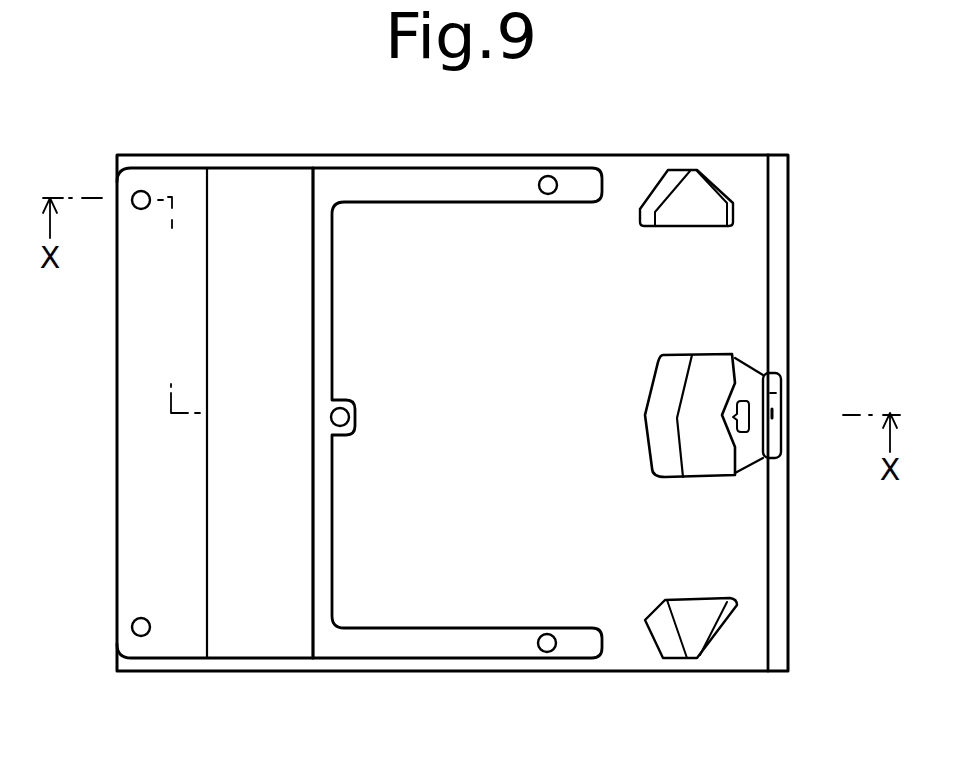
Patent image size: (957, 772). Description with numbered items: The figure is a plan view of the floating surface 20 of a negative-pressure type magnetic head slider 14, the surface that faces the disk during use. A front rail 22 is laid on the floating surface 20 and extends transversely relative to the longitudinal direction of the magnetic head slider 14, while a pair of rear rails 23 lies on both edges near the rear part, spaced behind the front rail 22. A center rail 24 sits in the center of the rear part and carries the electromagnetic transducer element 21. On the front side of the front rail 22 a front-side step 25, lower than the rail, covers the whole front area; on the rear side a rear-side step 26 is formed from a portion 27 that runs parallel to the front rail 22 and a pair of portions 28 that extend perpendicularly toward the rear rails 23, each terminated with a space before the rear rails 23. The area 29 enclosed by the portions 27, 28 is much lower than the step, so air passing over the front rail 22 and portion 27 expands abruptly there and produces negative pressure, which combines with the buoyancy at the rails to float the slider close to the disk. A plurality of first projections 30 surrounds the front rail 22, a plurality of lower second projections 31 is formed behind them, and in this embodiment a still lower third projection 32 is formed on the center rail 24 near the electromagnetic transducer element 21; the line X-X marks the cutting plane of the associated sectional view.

The magnetic head slider 14 is at (747, 155).
The floating surface 20 is at (605, 250).
The electromagnetic transducer element 21 is at (778, 392).
The front rail 22 is at (262, 629).
The rear rails 23 is at (692, 203).
The center rail 24 is at (712, 375).
The front-side step 25 is at (175, 621).
The rear-side step 26 is at (335, 640).
The portion extending parallel to the front rail 27 is at (327, 540).
The portions extending perpendicularly to the front rail 28 is at (397, 180).
The area surrounded by the step portions 29 is at (447, 361).
The first projections 30 is at (141, 191).
The second projections 31 is at (548, 176).
The third projection 32 is at (752, 420).